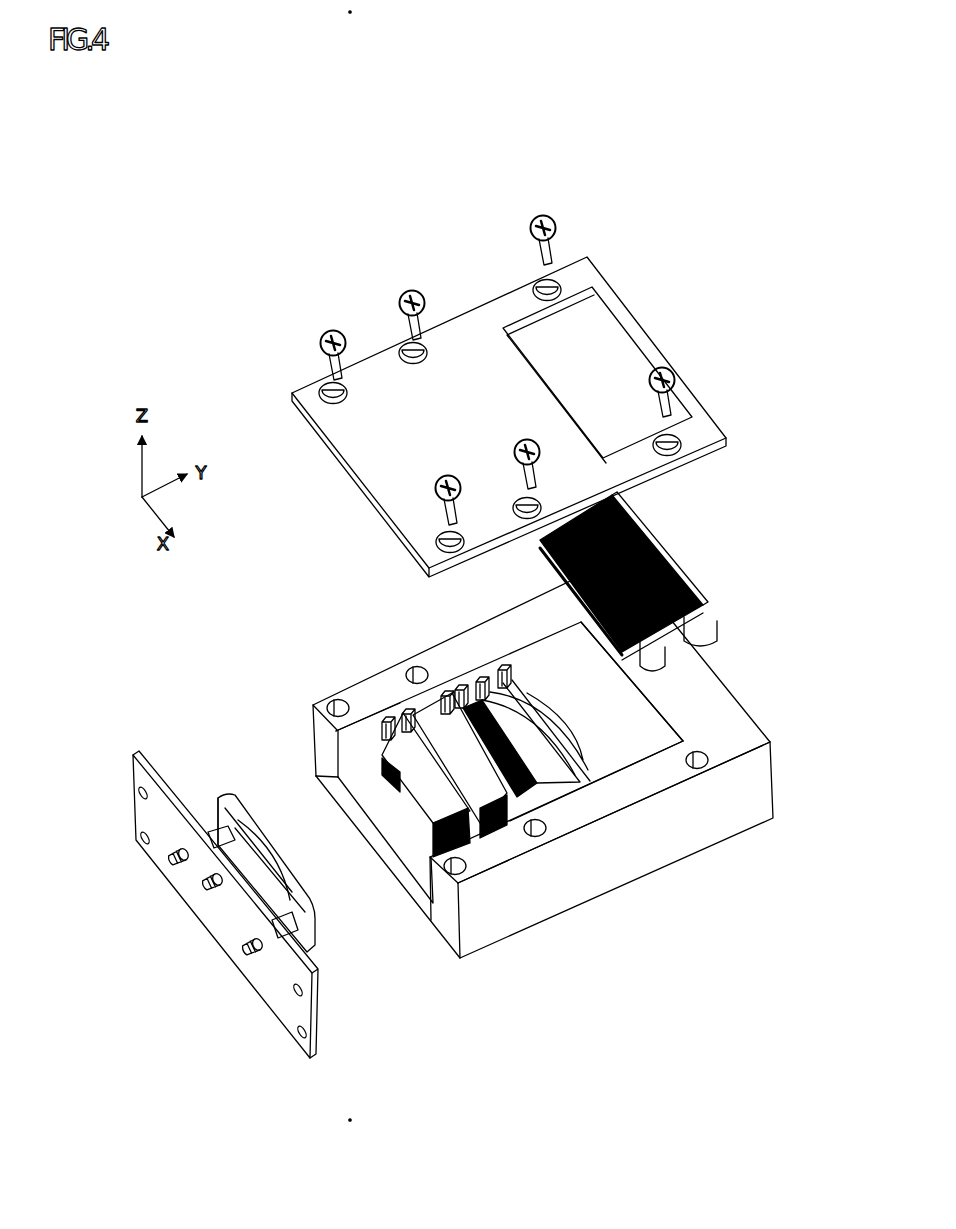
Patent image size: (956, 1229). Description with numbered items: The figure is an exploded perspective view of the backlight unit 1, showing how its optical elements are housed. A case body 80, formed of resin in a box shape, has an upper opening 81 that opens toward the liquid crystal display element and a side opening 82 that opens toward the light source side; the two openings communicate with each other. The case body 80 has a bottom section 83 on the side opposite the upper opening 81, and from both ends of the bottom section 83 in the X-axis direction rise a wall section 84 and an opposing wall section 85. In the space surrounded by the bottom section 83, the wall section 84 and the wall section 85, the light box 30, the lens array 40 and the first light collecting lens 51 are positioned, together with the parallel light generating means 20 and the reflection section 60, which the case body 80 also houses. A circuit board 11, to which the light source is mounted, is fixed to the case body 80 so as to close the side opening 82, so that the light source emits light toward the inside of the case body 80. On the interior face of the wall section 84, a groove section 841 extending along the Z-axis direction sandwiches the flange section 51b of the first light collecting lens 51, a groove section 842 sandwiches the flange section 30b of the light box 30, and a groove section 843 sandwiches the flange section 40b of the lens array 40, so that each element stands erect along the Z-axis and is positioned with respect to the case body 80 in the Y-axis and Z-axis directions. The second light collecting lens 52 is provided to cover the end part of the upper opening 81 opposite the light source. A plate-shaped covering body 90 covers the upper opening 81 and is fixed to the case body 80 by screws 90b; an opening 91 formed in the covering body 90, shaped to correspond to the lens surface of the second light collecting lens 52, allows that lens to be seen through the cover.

The backlight unit 1 is at (234, 309).
The circuit board 11 is at (282, 987).
The parallel light generating means 20 is at (218, 800).
The light box 30 is at (428, 790).
The flange section 30b is at (372, 742).
The lens array 40 is at (530, 793).
The flange section 40b is at (446, 673).
The first light collecting lens 51 is at (555, 783).
The flange section 51b is at (491, 650).
The second light collecting lens 52 is at (670, 578).
The reflection section 60 is at (617, 740).
The case body 80 is at (718, 663).
The upper opening 81 is at (352, 772).
The side opening 82 is at (326, 762).
The bottom section 83 is at (393, 823).
The wall section 84 is at (322, 733).
The wall section 85 is at (443, 885).
The groove section 841 is at (527, 680).
The groove section 842 is at (398, 699).
The groove section 843 is at (445, 686).
The covering body 90 is at (728, 475).
The screw 90b is at (333, 331).
The opening 91 is at (600, 304).